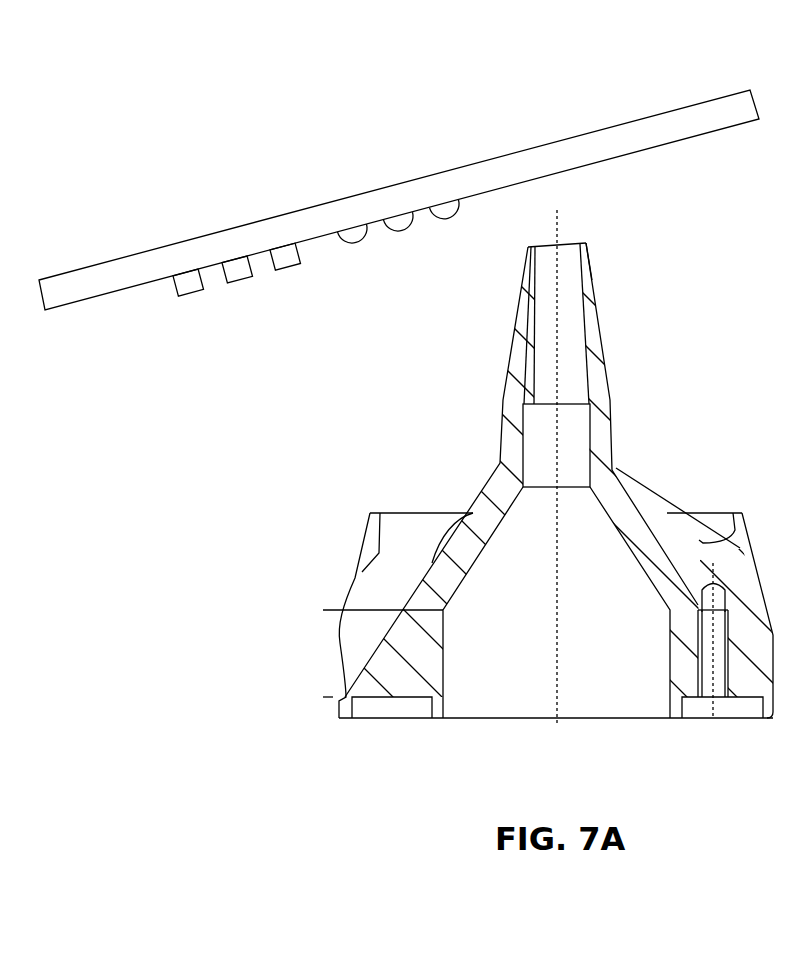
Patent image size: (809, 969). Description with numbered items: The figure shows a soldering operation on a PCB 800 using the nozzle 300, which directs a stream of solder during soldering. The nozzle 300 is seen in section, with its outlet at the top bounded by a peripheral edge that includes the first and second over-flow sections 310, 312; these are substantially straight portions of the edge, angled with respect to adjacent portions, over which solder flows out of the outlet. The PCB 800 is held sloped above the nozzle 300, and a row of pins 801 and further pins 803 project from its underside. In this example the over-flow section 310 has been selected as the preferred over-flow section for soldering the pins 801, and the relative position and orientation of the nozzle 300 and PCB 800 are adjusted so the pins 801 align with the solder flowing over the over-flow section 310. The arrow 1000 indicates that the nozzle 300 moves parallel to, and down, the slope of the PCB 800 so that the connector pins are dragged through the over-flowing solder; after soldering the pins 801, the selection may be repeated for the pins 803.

The PCB 800 is at (544, 146).
The pins 801 is at (448, 218).
The pins 803 is at (287, 269).
The nozzle 300 is at (693, 342).
The first over-flow section 310 is at (547, 243).
The second over-flow section 312 is at (587, 246).
The arrow 1000 is at (398, 402).